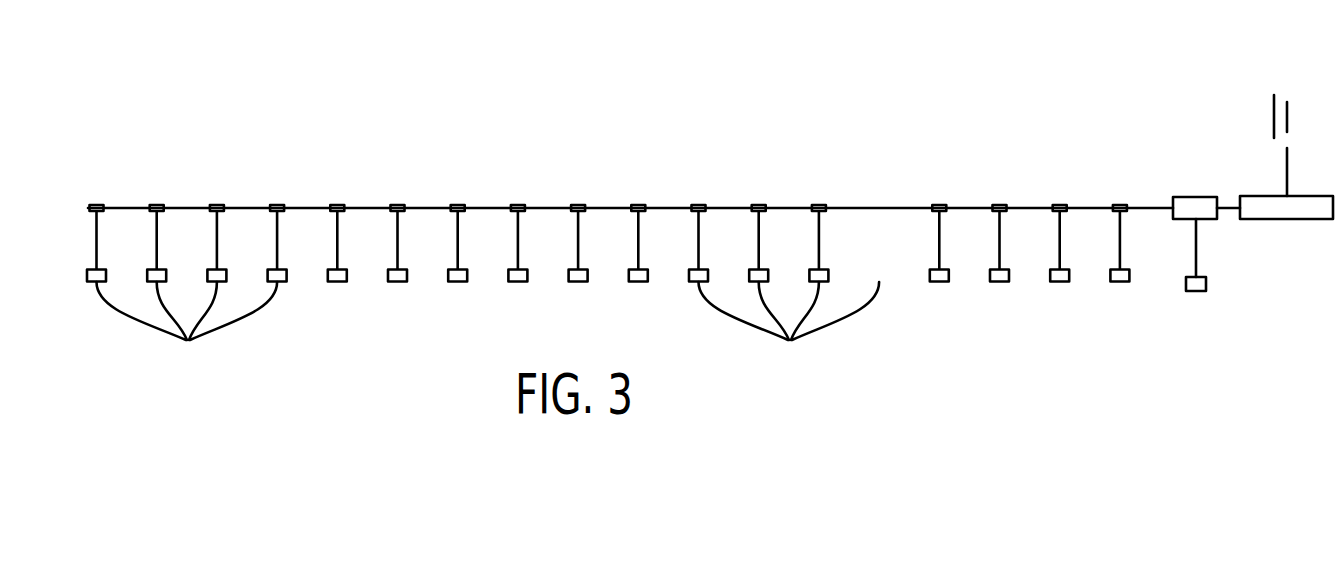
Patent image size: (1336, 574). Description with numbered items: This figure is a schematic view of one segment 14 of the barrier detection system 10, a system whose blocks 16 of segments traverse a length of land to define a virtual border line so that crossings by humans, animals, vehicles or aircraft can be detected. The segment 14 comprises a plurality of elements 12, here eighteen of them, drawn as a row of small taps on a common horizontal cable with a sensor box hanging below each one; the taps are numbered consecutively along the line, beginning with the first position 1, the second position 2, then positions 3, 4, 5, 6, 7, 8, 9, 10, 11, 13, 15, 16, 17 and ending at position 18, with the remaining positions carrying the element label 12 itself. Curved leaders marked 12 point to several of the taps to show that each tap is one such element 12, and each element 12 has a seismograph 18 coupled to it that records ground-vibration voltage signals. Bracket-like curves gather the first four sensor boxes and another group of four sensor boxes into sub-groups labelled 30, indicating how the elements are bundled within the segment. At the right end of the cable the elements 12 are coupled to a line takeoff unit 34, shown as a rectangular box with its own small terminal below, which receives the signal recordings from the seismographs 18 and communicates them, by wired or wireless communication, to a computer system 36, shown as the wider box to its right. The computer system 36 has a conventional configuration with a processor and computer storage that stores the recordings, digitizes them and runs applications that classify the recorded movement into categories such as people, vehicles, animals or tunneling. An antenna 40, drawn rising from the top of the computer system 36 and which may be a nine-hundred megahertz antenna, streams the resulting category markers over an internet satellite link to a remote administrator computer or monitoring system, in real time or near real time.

The segment 14 is at (694, 80).
The element 12 is at (103, 207).
The sensor group 30 is at (488, 328).
The line takeoff unit 34 is at (1196, 197).
The computer system 36 is at (1288, 220).
The antenna 40 is at (1297, 115).
The sensor node 1 is at (96, 226).
The sensor node 2 is at (156, 226).
The sensor node 3 is at (216, 226).
The sensor node 4 is at (277, 226).
The sensor node 5 is at (337, 226).
The sensor node 6 is at (397, 226).
The sensor node 7 is at (457, 226).
The sensor node 8 is at (517, 226).
The sensor node 9 is at (578, 226).
The barrier detection system 10 is at (638, 226).
The sensor node 11 is at (699, 226).
The sensor node 13 is at (819, 226).
The sensor node 15 is at (939, 226).
The block 16 is at (1000, 226).
The sensor node 17 is at (1060, 226).
The seismograph 18 is at (1120, 226).